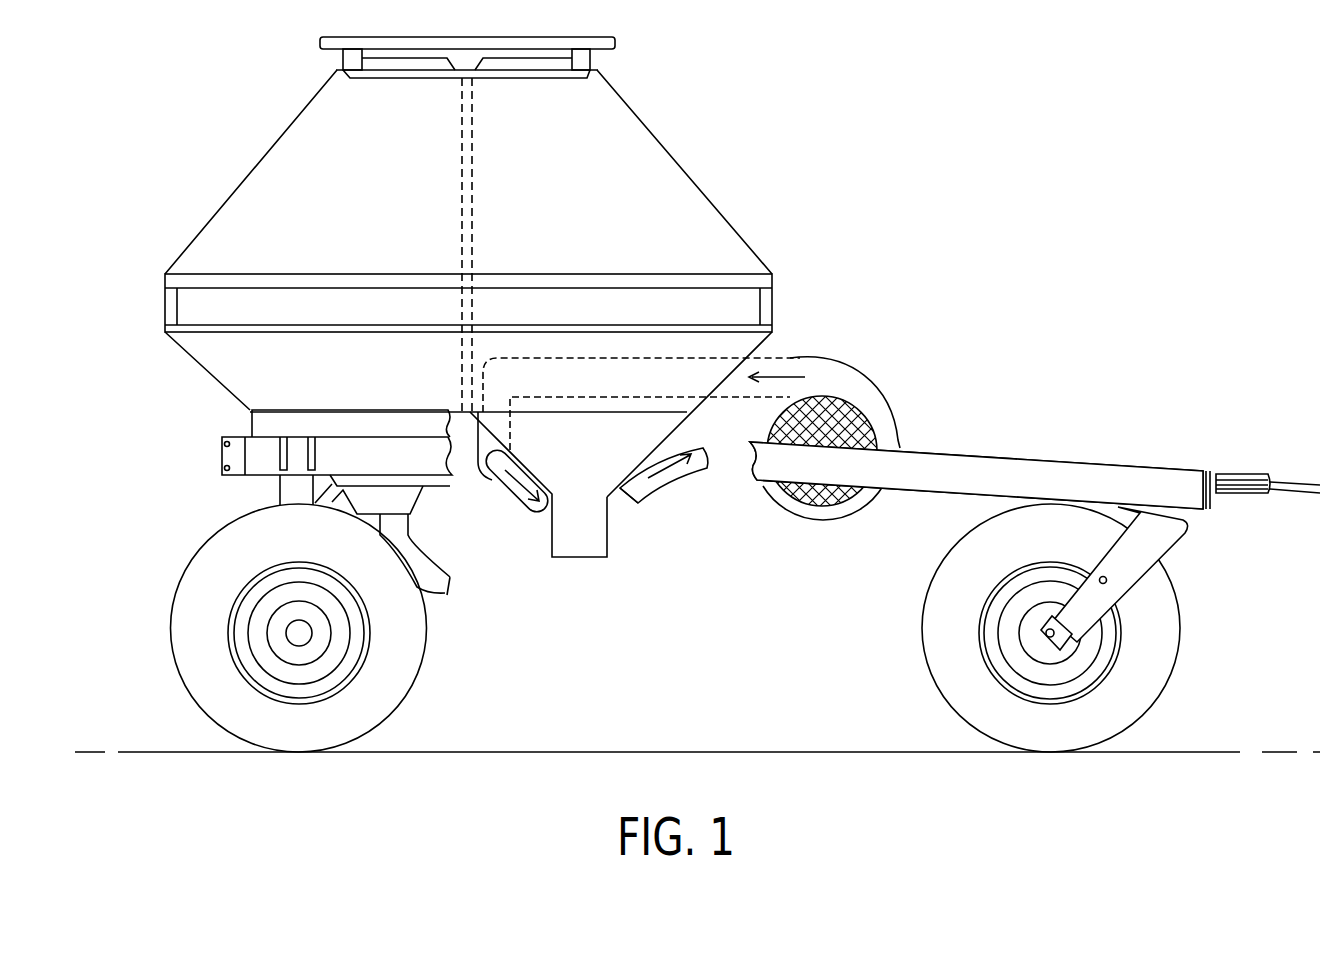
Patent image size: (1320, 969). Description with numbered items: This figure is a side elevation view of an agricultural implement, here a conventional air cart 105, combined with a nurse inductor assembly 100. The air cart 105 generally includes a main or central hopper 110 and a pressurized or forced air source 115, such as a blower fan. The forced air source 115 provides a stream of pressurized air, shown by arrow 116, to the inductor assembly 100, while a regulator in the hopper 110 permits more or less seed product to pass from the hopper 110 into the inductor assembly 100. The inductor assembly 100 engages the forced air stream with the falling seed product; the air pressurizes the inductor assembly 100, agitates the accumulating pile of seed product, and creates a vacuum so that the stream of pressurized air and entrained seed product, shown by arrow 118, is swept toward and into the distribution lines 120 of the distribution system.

The nurse inductor assembly 100 is at (578, 577).
The air cart 105 is at (510, 297).
The central hopper 110 is at (637, 175).
The forced air source 115 is at (902, 371).
The stream of forced air 116 is at (782, 376).
The stream of pressurized air and entrained seed product 118 is at (666, 449).
The distribution lines 120 is at (664, 473).